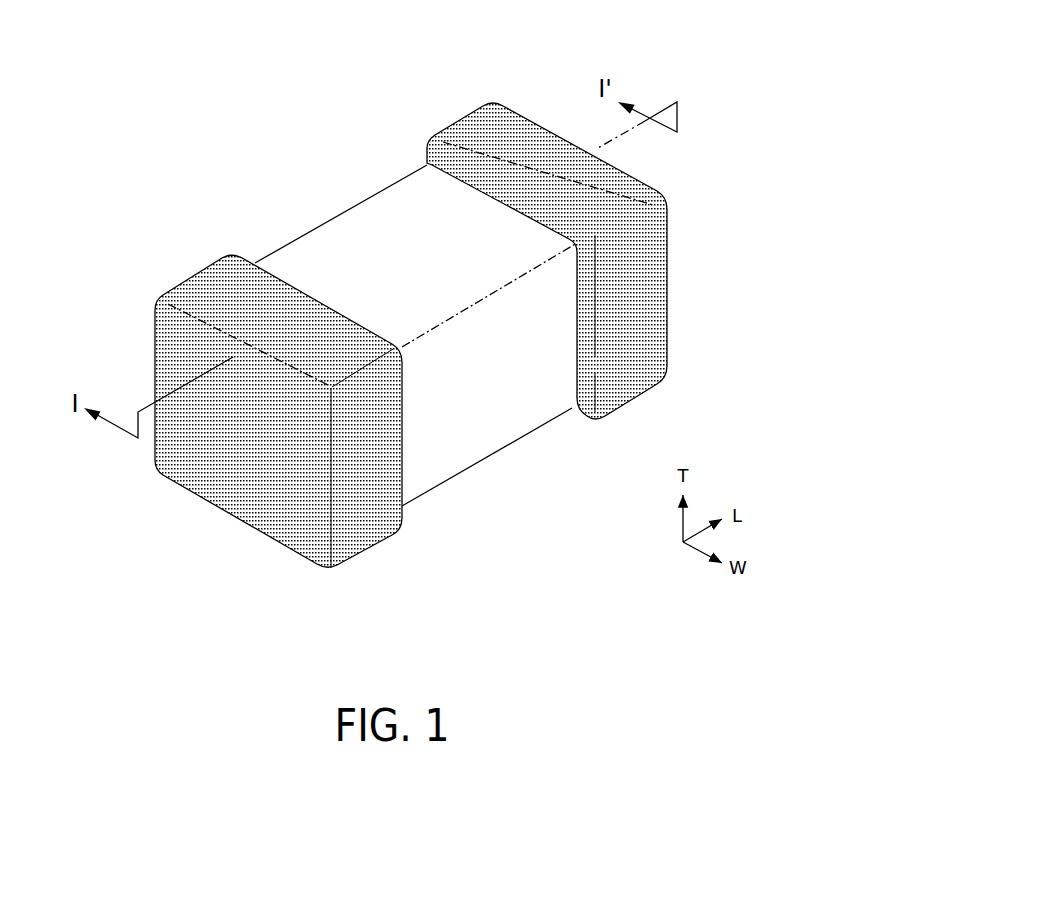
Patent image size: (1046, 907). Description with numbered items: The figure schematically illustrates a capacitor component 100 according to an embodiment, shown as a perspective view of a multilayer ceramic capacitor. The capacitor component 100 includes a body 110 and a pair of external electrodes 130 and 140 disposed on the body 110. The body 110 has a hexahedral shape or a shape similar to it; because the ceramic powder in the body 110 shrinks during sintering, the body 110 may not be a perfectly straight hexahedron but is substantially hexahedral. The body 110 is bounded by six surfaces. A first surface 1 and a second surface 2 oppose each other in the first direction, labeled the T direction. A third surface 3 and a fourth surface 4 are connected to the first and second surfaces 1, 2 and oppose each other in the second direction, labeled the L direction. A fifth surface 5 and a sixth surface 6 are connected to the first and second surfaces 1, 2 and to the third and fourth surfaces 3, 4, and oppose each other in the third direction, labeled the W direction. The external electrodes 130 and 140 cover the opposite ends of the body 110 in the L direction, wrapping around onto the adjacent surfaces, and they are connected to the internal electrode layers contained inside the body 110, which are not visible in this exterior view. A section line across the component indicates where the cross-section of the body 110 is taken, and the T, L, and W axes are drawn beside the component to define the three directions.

The capacitor component 100 is at (224, 25).
The body 110 is at (426, 330).
The external electrode 130 is at (214, 285).
The external electrode 140 is at (475, 133).
The first surface 1 is at (447, 440).
The second surface 2 is at (408, 232).
The third surface 3 is at (237, 487).
The fourth surface 4 is at (633, 298).
The fifth surface 5 is at (492, 412).
The sixth surface 6 is at (373, 260).